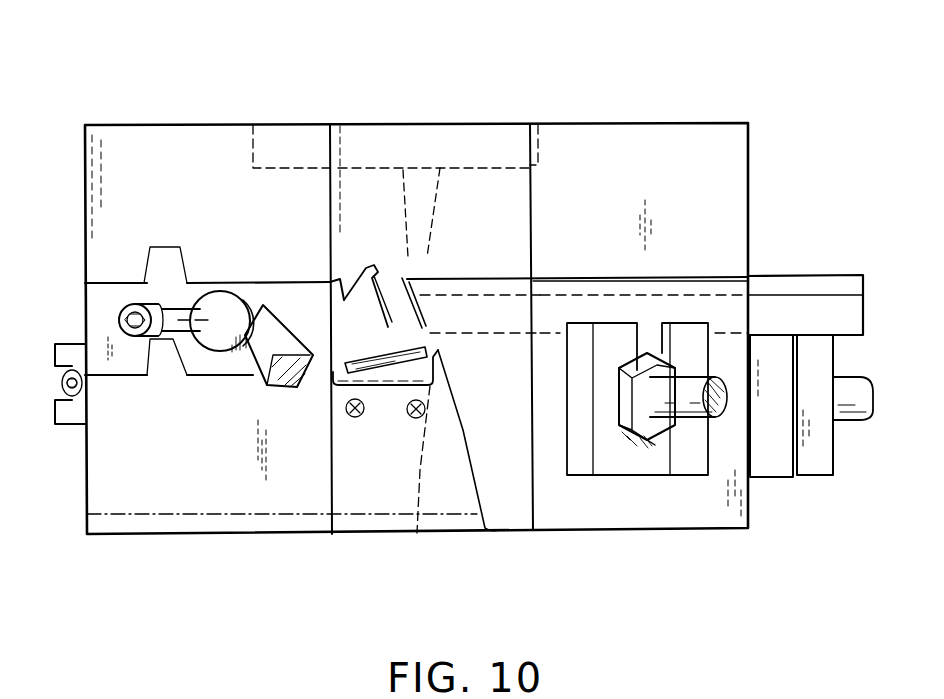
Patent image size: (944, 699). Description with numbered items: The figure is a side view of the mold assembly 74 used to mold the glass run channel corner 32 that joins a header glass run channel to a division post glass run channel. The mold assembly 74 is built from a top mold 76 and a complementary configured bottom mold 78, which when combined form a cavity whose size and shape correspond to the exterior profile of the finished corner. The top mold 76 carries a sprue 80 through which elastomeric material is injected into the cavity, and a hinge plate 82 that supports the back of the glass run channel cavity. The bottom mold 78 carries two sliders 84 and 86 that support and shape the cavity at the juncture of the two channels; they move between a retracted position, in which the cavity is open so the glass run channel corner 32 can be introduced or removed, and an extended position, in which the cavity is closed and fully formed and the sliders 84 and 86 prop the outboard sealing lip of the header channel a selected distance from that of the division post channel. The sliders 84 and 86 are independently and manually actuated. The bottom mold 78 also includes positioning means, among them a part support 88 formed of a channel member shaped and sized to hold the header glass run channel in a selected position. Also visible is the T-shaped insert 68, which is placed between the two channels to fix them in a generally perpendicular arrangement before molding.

The mold assembly 74 is at (423, 75).
The top mold 76 is at (165, 144).
The bottom mold 78 is at (202, 503).
The sprue 80 is at (420, 197).
The hinge plate 82 is at (93, 310).
The slider 84 is at (601, 508).
The slider 86 is at (768, 470).
The part support 88 is at (418, 524).
The T-shaped insert 68 is at (803, 308).
The glass run channel corner 32 is at (653, 697).